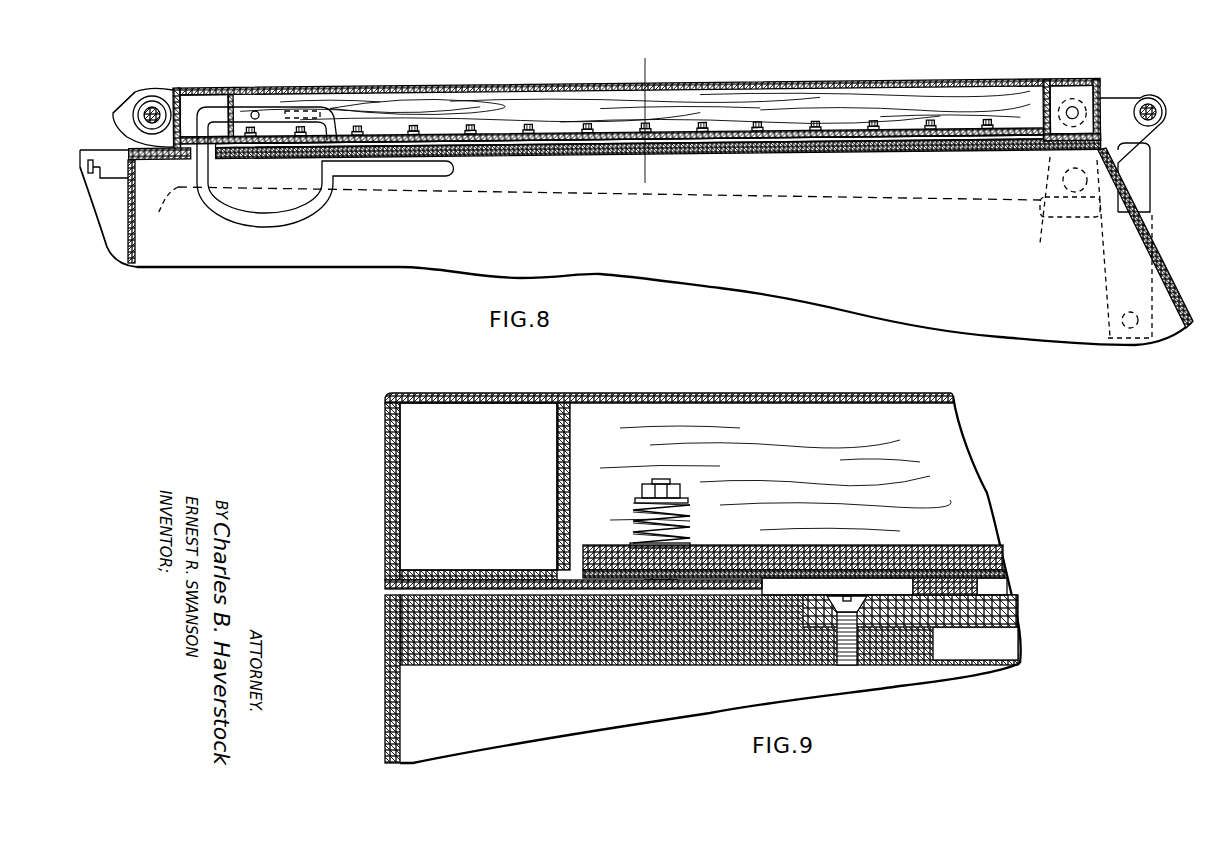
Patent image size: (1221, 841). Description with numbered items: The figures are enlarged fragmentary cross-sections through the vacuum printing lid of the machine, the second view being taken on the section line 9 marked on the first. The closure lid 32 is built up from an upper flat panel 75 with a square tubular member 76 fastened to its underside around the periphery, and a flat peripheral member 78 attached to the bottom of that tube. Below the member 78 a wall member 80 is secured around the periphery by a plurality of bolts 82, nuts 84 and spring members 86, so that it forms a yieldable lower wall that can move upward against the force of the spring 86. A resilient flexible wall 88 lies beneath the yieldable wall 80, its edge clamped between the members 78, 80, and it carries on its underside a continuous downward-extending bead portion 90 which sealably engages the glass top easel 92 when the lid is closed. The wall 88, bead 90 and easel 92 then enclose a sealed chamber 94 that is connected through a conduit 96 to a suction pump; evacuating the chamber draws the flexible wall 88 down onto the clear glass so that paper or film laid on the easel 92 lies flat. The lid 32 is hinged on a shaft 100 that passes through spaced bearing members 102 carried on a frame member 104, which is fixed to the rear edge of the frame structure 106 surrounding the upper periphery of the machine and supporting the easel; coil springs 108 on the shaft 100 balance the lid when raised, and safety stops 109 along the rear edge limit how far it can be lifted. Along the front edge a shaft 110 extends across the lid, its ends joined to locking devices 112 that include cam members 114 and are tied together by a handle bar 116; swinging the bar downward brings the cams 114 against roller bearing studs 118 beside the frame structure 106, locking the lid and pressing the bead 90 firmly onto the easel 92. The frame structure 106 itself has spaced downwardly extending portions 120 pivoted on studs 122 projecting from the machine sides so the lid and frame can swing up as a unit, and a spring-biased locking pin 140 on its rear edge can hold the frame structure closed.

In FIG. 8, the section line 9— 9 is at (640, 68).
In FIG. 8, the closure lid 32 is at (854, 79).
In FIG. 9, the closure lid 32 is at (686, 390).
In FIG. 8, the upper flat panel 75 is at (705, 84).
In FIG. 9, the upper flat panel 75 is at (825, 393).
In FIG. 8, the square tubular member 76 is at (233, 95).
In FIG. 9, the square tubular member 76 is at (571, 476).
In FIG. 8, the flat peripheral member 78 is at (233, 150).
In FIG. 9, the flat peripheral member 78 is at (517, 589).
In FIG. 8, the wall member 80 is at (392, 130).
In FIG. 9, the wall member 80 is at (830, 546).
In FIG. 9, the bolt 82 is at (666, 563).
In FIG. 9, the nut 84 is at (680, 491).
In FIG. 9, the spring member 86 is at (638, 513).
In FIG. 8, the resilient flexible wall 88 is at (562, 147).
In FIG. 9, the resilient flexible wall 88 is at (1006, 571).
In FIG. 8, the bead portion 90 is at (312, 187).
In FIG. 9, the bead portion 90 is at (932, 578).
In FIG. 8, the glass top easel 92 is at (696, 155).
In FIG. 9, the glass top easel 92 is at (977, 617).
In FIG. 8, the sealed chamber 94 is at (515, 150).
In FIG. 9, the sealed chamber 94 is at (1007, 587).
In FIG. 8, the conduit 96 is at (262, 223).
In FIG. 8, the shaft 100 is at (160, 104).
In FIG. 8, the bearing member 102 is at (145, 128).
In FIG. 8, the frame member 104 is at (160, 150).
In FIG. 8, the frame structure 106 is at (636, 247).
In FIG. 9, the frame structure 106 is at (606, 670).
In FIG. 8, the coil spring 108 is at (128, 115).
In FIG. 8, the safety stop 109 is at (140, 92).
In FIG. 8, the shaft 110 is at (1073, 105).
In FIG. 8, the locking device 112 is at (1117, 95).
In FIG. 8, the cam member 114 is at (1055, 222).
In FIG. 8, the handle bar 116 is at (1162, 102).
In FIG. 8, the roller bearing stud 118 is at (1063, 177).
In FIG. 8, the downwardly extending portion 120 is at (1148, 178).
In FIG. 8, the stud 122 is at (1128, 330).
In FIG. 8, the locking pin 140 is at (90, 175).